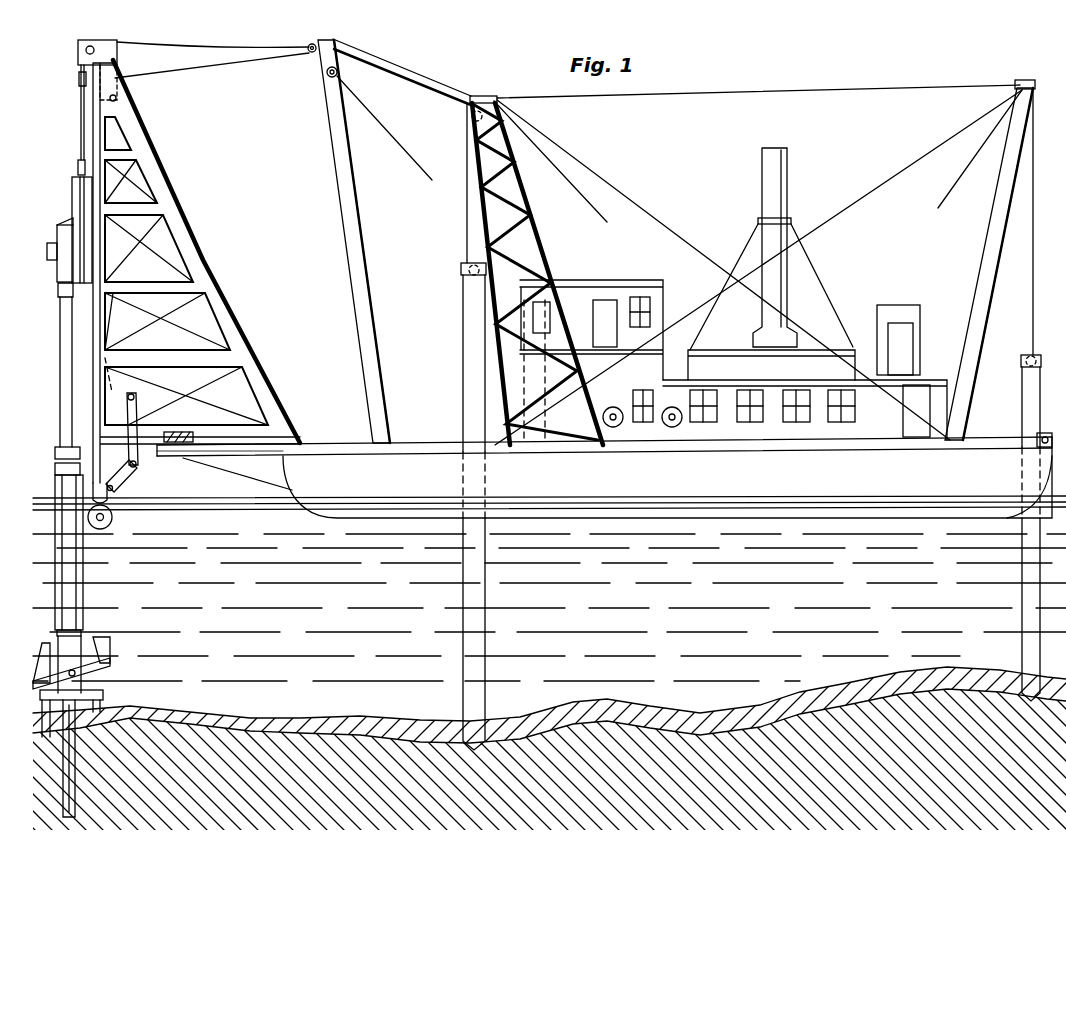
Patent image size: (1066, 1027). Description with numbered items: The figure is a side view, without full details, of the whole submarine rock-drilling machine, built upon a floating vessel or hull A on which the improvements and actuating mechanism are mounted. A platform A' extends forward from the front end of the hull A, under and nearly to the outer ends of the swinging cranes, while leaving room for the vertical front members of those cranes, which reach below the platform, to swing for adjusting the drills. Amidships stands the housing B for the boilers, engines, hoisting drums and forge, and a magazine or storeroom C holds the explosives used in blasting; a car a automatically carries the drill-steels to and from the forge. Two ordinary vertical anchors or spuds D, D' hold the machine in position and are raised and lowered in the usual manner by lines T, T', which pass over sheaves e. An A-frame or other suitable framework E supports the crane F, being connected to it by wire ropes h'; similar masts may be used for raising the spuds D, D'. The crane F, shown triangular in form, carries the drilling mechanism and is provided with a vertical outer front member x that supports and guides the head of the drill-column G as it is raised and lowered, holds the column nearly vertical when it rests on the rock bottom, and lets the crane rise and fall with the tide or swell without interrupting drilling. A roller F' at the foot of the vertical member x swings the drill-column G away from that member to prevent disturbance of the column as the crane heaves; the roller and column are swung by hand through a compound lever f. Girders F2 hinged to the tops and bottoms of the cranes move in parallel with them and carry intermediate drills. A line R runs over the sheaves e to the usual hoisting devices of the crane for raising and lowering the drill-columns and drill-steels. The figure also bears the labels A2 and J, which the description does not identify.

The floating vessel or hull A is at (604, 466).
The platform A' is at (244, 406).
The car a is at (188, 458).
The cap head of pile lead A2 is at (118, 70).
The housing B is at (611, 279).
The magazine or storeroom C is at (613, 428).
The vertical anchor or spud D is at (447, 426).
The vertical anchor or spud D' is at (1008, 395).
The A-frame E is at (328, 207).
The sheave e is at (78, 48).
The crane F is at (196, 271).
The roller F' is at (129, 501).
The girder F2 is at (78, 79).
The compound lever f is at (150, 414).
The drill-column G is at (70, 190).
The valve box J is at (45, 247).
The wire rope h' is at (213, 77).
The line R is at (78, 103).
The line T is at (641, 242).
The line T' is at (759, 265).
The vertical front member x is at (80, 137).